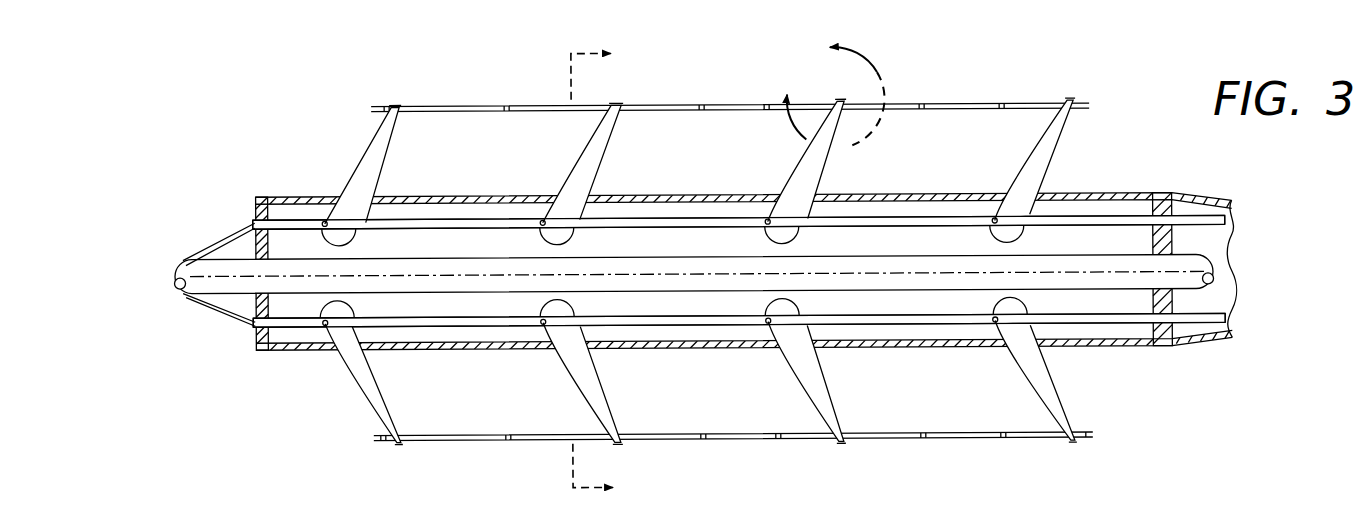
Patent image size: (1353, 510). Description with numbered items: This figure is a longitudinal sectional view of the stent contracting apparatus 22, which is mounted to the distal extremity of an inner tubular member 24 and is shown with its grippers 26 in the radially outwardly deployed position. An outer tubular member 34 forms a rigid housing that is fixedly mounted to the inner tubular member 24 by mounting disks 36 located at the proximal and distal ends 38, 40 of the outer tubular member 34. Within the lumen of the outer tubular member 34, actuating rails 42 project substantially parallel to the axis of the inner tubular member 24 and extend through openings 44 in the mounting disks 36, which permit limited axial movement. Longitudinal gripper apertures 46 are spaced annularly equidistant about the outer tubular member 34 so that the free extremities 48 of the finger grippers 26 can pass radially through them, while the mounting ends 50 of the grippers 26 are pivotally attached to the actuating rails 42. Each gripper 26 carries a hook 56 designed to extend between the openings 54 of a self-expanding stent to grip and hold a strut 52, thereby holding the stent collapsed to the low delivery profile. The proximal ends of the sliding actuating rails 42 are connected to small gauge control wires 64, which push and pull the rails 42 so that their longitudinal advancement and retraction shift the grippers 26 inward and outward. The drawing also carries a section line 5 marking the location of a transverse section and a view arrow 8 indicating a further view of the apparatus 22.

The stent contracting apparatus 22 is at (898, 74).
The inner tubular member 24 is at (179, 263).
The retractable grippers 26 is at (396, 171).
The outer tubular member 34 is at (526, 194).
The mounting disks 36 is at (270, 209).
The proximal end 38 is at (262, 196).
The distal end 40 is at (1196, 343).
The actuating rails 42 is at (438, 232).
The openings 44 is at (257, 206).
The longitudinal gripper apertures 46 is at (405, 196).
The free extremities 48 is at (381, 138).
The mounting ends 50 is at (574, 240).
The struts 52 is at (697, 104).
The openings 54 is at (742, 104).
The hooks 56 is at (395, 104).
The control wires 64 is at (206, 246).
The section line 5- 5 is at (605, 278).
The view arrow 8 is at (836, 94).